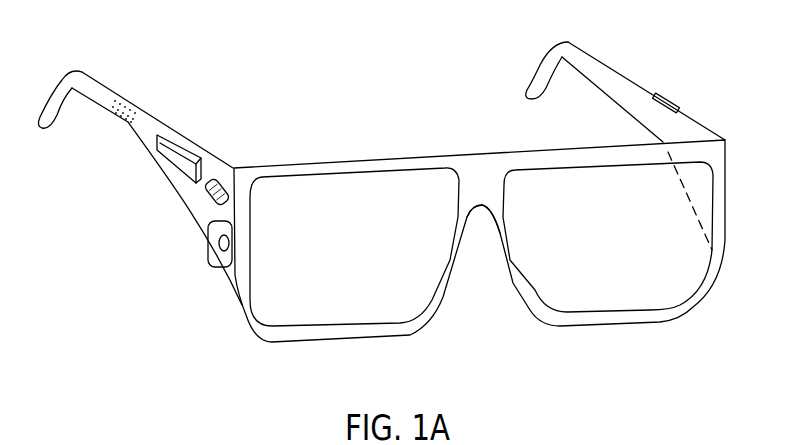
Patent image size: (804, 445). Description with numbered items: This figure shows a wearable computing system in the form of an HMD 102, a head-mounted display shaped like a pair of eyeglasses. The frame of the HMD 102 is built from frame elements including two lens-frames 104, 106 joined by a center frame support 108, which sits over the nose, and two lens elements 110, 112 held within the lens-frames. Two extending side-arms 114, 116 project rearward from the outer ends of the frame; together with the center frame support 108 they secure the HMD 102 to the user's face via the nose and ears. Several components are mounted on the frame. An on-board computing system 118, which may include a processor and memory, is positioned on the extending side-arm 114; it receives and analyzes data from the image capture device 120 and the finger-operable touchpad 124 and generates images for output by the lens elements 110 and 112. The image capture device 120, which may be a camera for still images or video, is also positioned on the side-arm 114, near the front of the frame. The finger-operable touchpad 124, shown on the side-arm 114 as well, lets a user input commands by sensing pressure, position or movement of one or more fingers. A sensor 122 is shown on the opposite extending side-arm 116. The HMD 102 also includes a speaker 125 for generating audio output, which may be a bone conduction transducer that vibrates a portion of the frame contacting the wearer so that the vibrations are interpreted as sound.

The HMD 102 is at (335, 75).
The lens-frame 104 is at (327, 167).
The lens-frame 106 is at (557, 153).
The center frame support 108 is at (480, 173).
The lens element 110 is at (300, 308).
The lens element 112 is at (623, 293).
The extending side-arm 114 is at (173, 133).
The extending side-arm 116 is at (630, 85).
The on-board computing system 118 is at (172, 153).
The image capture device 120 is at (208, 235).
The sensor 122 is at (672, 100).
The finger-operable touchpad 124 is at (212, 188).
The speaker 125 is at (123, 107).